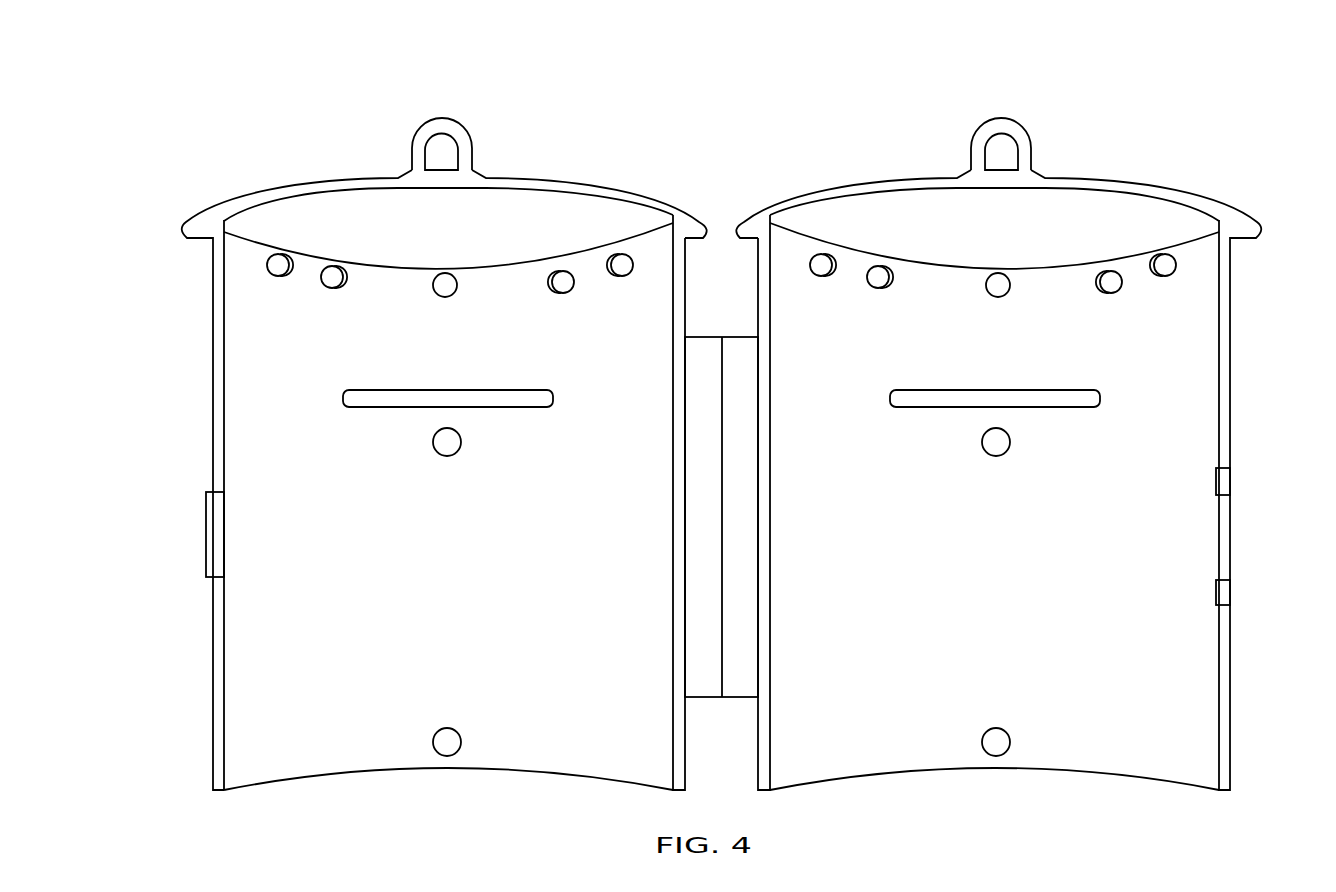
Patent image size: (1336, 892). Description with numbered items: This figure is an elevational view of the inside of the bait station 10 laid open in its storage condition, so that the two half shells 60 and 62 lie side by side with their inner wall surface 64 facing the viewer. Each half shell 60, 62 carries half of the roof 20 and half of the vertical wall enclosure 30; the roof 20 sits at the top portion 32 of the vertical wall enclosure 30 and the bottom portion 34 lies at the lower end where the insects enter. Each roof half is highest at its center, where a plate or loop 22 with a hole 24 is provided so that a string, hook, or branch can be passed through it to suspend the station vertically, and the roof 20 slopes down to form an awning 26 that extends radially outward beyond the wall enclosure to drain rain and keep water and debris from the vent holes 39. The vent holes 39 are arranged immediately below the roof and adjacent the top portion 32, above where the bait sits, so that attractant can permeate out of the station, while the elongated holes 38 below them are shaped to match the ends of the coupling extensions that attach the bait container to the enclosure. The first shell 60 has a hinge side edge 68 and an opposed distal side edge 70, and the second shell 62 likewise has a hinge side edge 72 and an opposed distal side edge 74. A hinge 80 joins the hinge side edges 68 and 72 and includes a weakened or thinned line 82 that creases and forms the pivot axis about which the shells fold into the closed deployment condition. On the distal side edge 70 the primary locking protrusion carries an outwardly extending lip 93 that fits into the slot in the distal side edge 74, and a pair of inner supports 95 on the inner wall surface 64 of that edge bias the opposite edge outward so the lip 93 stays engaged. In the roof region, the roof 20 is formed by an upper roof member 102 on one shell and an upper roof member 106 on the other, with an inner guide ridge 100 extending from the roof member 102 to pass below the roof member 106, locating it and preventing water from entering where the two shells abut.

The bait station 10 is at (1128, 88).
The roof 20 is at (572, 183).
The loop 22 is at (457, 120).
The hole 24 is at (432, 145).
The awning 26 is at (693, 243).
The vertical wall enclosure 30 is at (212, 460).
The top portion 32 is at (212, 268).
The bottom portion 34 is at (213, 774).
The holes 38 is at (393, 398).
The vent holes 39 is at (277, 272).
The half shell 60 is at (490, 765).
The half shell 62 is at (1056, 768).
The inner wall surface 64 is at (421, 709).
The hinge side edge 68 is at (683, 725).
The distal side edge 70 is at (213, 655).
The hinge side edge 72 is at (768, 735).
The distal side edge 74 is at (1232, 735).
The hinge 80 is at (740, 697).
The weakened line 82 is at (718, 585).
The lip 93 is at (206, 527).
The inner supports 95 is at (1228, 482).
The inner guide ridge 100 is at (338, 188).
The upper roof member 102 is at (302, 184).
The upper roof member 106 is at (1122, 186).